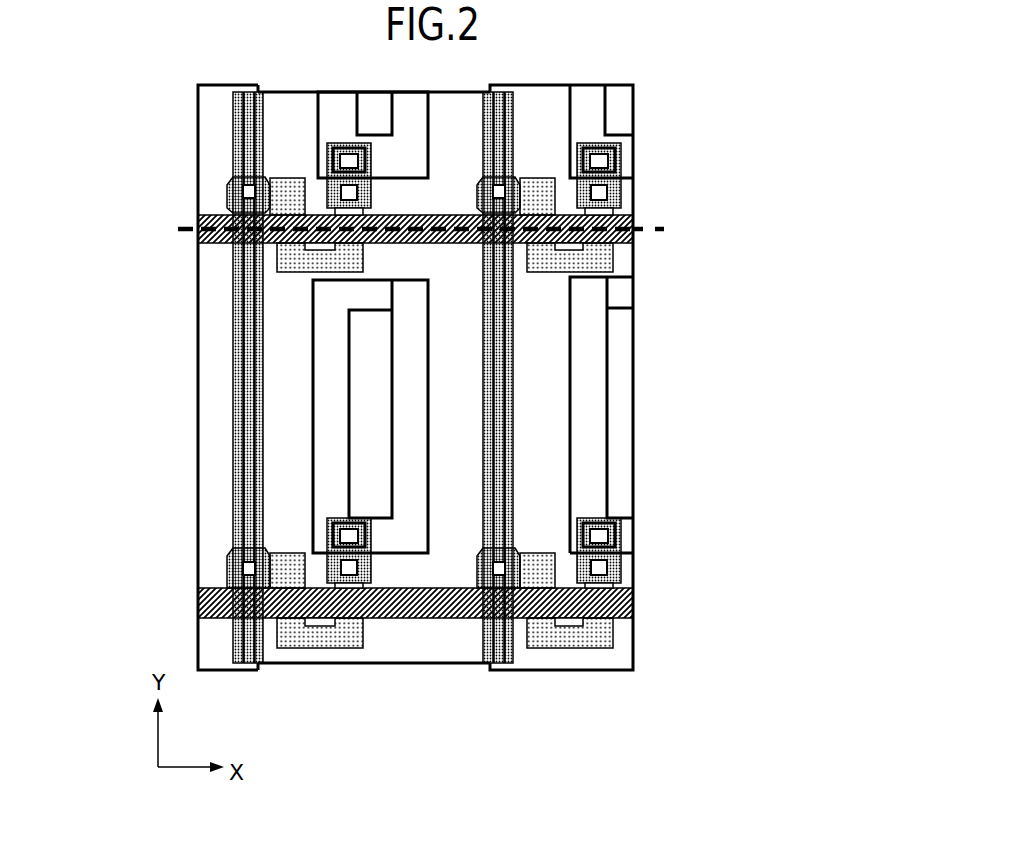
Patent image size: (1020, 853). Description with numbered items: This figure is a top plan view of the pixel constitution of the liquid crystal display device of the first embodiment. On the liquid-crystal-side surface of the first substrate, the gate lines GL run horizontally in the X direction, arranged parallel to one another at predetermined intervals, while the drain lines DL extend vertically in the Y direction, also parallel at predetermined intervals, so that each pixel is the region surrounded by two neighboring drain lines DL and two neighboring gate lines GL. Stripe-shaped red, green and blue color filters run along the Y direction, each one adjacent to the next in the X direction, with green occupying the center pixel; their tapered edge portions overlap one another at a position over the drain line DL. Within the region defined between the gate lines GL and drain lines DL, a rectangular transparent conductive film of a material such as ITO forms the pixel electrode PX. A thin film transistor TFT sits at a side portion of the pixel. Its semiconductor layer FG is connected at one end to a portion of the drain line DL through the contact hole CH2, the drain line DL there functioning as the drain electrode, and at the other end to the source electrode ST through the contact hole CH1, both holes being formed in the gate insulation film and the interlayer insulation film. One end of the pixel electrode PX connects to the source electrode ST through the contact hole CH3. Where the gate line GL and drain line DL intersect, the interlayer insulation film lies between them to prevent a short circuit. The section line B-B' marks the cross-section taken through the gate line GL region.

The drain line DL is at (248, 517).
The gate line GL is at (637, 612).
The pixel electrode PX is at (598, 365).
The thin film transistor TFT is at (368, 625).
The semiconductor layer FG is at (595, 640).
The source electrode ST is at (617, 562).
The contact hole CH1 is at (600, 192).
The contact hole CH2 is at (247, 567).
The contact hole CH3 is at (600, 163).
The section line B is at (392, 231).
The section line B' is at (671, 229).